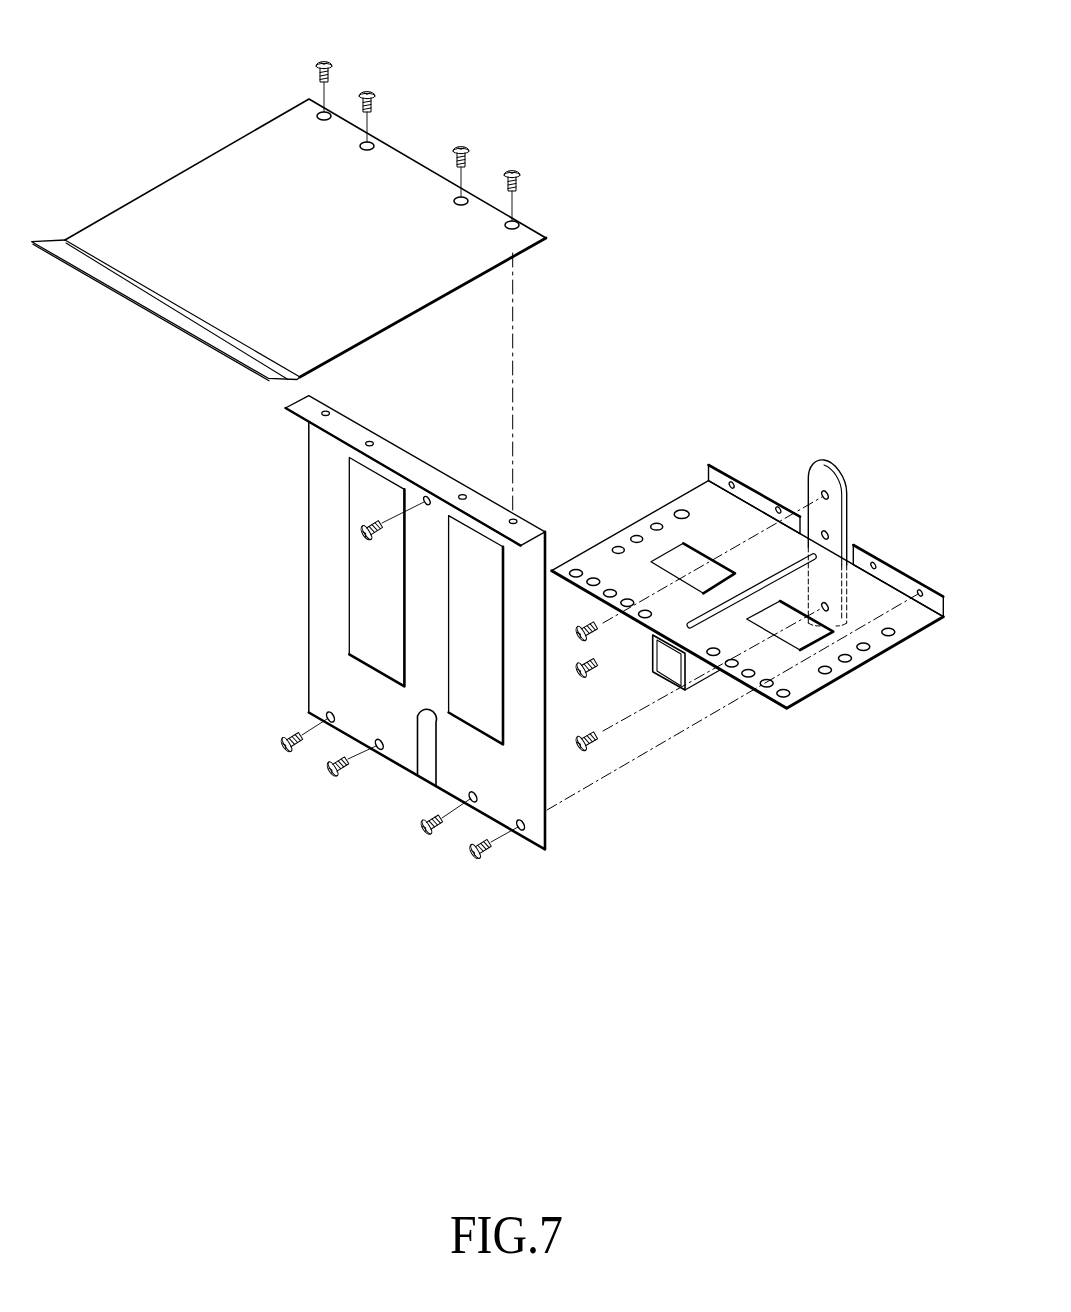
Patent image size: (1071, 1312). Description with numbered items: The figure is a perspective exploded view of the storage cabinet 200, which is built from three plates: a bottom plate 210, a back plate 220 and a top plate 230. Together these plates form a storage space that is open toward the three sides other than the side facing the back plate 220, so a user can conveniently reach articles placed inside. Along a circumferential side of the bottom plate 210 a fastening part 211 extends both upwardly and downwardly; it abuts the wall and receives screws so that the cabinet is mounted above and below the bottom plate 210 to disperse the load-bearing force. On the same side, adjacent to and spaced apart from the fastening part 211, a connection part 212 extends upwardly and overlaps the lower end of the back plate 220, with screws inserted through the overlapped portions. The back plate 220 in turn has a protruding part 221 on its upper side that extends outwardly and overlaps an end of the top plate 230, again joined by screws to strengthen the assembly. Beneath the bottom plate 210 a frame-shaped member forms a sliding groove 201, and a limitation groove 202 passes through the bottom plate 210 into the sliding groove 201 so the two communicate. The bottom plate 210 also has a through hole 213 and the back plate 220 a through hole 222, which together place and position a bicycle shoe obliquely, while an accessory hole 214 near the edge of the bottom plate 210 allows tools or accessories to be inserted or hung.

The storage cabinet 200 is at (722, 210).
The sliding groove 201 is at (672, 668).
The limitation groove 202 is at (792, 560).
The bottom plate 210 is at (813, 723).
The fastening part 211 is at (818, 483).
The connection part 212 is at (720, 475).
The through hole 213 is at (682, 543).
The accessory hole 214 is at (657, 523).
The back plate 220 is at (314, 606).
The protruding part 221 is at (299, 408).
The through hole 222 is at (352, 649).
The top plate 230 is at (278, 130).